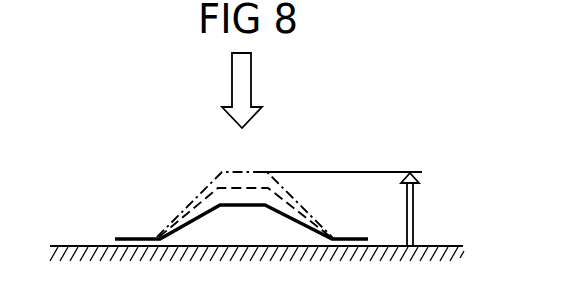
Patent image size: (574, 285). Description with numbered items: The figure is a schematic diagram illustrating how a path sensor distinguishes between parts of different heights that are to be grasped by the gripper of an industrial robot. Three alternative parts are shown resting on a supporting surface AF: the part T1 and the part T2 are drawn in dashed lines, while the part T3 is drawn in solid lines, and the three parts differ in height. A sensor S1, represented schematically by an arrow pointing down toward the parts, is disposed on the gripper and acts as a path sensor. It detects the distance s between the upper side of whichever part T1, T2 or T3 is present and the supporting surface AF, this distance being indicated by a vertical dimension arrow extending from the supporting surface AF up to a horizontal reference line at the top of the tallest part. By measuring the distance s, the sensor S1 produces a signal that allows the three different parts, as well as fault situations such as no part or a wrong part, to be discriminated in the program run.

The sensor S1 is at (245, 74).
The part T1 is at (210, 183).
The part T2 is at (272, 186).
The part T3 is at (206, 212).
The distance s is at (414, 209).
The supporting surface AF is at (54, 243).